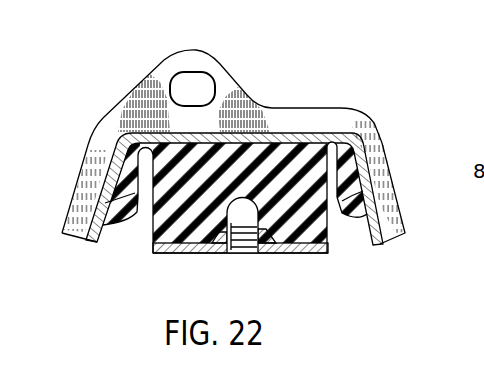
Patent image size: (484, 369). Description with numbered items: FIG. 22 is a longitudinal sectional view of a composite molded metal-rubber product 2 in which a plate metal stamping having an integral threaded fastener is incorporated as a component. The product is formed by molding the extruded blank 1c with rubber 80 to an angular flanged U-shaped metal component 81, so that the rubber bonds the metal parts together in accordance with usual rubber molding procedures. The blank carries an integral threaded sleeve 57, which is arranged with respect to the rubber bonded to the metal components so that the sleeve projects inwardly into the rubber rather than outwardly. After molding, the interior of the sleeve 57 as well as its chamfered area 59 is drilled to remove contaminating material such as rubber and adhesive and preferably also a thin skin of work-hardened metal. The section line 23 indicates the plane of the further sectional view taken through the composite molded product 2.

The composite molded product 2 is at (133, 243).
The rubber 80 is at (273, 163).
The angular flanged U-shaped metal component 81 is at (133, 118).
The threaded sleeve 57 is at (268, 240).
The chamfered area 59 is at (261, 253).
The extruded blank 1c is at (330, 255).
The section line 23- 23 is at (241, 60).